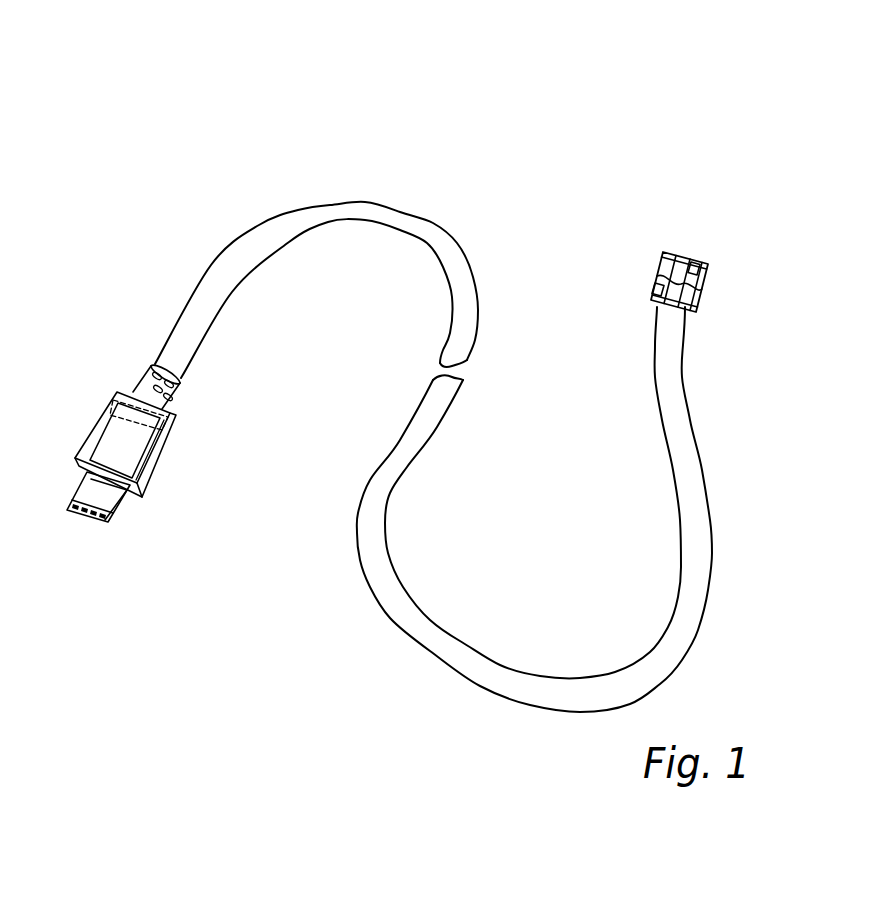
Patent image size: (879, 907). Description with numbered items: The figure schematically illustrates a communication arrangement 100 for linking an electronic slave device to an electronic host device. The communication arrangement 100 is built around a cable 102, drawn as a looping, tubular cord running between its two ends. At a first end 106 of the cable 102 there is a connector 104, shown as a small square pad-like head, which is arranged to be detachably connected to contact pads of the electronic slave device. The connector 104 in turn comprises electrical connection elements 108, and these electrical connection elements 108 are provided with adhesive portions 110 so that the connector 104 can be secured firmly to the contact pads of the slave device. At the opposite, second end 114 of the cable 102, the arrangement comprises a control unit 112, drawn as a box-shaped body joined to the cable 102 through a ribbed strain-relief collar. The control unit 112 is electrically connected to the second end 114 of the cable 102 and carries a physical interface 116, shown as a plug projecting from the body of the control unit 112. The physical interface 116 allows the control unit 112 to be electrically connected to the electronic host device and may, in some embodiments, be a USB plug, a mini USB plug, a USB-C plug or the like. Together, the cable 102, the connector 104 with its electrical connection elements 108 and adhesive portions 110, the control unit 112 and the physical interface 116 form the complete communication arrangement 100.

The communication arrangement 100 is at (628, 99).
The cable 102 is at (680, 449).
The connector 104 is at (660, 258).
The first end 106 is at (719, 324).
The electrical connection elements 108 is at (700, 286).
The adhesive portions 110 is at (652, 291).
The control unit 112 is at (176, 414).
The second end 114 is at (131, 336).
The physical interface 116 is at (118, 444).